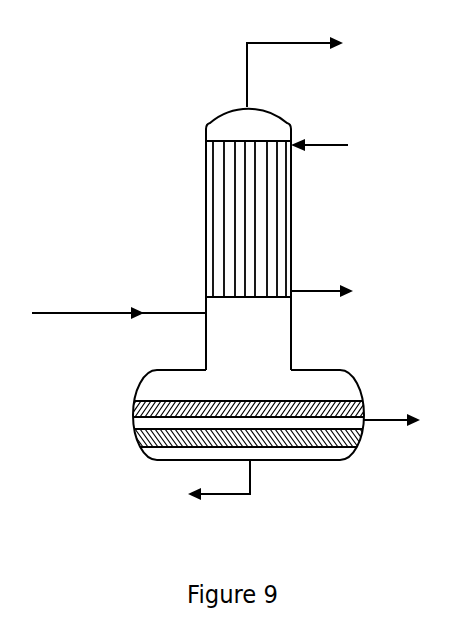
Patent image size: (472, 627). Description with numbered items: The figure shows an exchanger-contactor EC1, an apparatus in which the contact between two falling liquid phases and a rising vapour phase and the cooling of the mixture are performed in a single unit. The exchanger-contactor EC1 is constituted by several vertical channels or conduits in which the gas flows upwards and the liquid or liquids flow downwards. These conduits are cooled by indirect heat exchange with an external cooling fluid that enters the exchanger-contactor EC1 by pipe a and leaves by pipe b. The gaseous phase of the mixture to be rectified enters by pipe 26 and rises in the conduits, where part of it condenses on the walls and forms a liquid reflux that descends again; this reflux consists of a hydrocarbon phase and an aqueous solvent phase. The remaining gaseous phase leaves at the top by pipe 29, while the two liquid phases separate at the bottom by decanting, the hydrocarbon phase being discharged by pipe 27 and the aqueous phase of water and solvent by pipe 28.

The exchanger-contactor EC1 is at (205, 213).
The pipe 29 is at (298, 43).
The pipe a is at (317, 151).
The pipe b is at (307, 285).
The pipe 26 is at (105, 311).
The pipe 27 is at (395, 415).
The pipe 28 is at (212, 497).